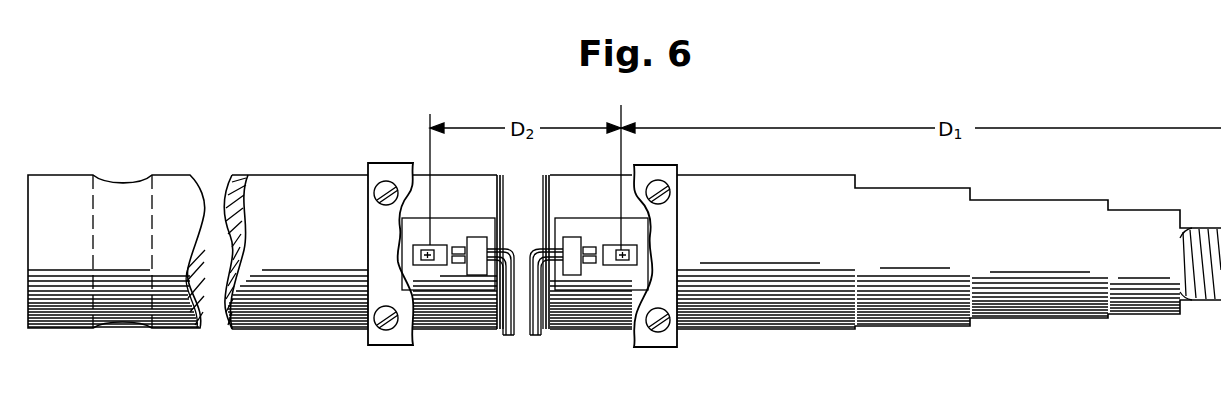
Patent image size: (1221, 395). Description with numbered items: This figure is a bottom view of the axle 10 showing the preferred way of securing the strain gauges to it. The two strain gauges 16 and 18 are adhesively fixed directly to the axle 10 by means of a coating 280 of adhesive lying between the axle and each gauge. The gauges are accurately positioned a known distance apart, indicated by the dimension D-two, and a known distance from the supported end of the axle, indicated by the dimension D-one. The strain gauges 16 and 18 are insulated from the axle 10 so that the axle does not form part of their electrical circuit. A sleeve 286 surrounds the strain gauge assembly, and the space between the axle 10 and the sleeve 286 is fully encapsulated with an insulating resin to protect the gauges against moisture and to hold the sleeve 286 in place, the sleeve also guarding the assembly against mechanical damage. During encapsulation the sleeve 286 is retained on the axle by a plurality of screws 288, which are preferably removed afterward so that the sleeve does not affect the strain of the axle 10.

The axle 10 is at (261, 182).
The strain gauge 16 is at (444, 265).
The strain gauge 18 is at (606, 265).
The coating of adhesive 280 is at (468, 207).
The sleeve 286 is at (372, 233).
The screws 288 is at (379, 184).